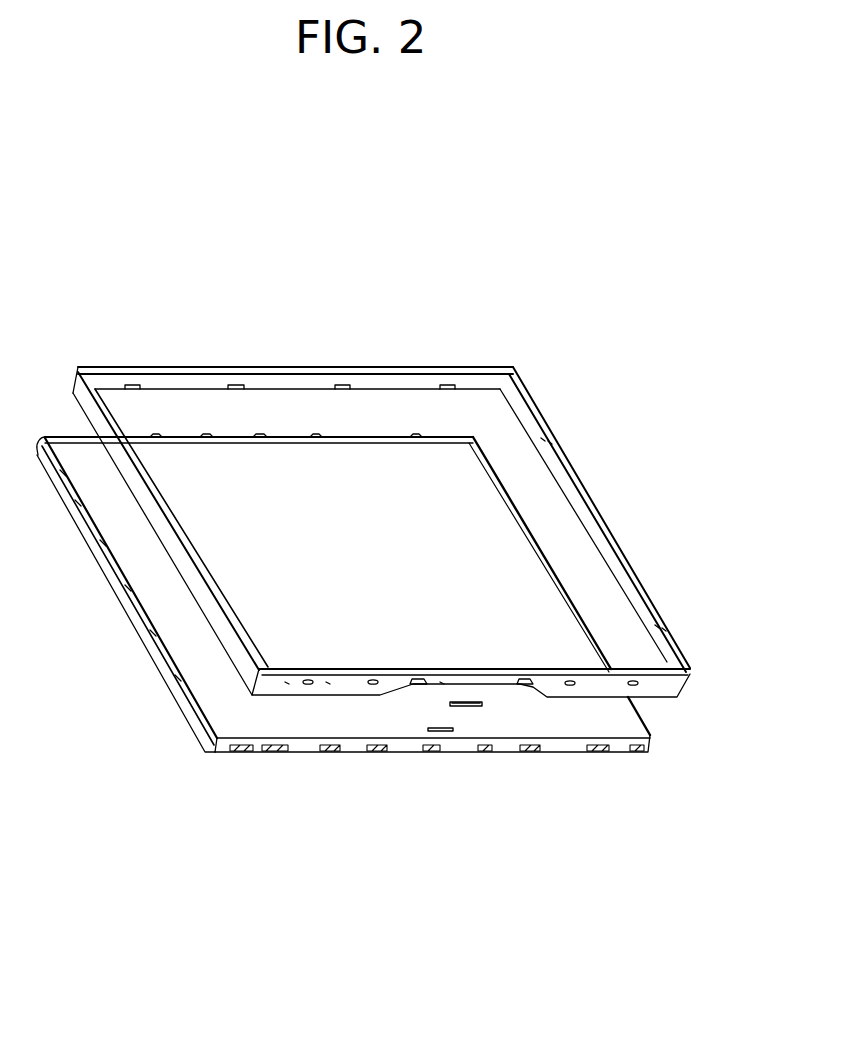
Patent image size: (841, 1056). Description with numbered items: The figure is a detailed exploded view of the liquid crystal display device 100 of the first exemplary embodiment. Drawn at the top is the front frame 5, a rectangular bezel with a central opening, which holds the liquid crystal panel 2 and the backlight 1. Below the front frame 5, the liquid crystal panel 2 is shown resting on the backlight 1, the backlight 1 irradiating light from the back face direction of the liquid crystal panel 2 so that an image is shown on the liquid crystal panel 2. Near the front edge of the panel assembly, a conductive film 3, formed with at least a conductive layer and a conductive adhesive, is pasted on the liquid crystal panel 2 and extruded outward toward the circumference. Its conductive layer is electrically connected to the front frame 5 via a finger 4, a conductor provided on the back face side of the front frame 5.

The liquid crystal display device 100 is at (610, 404).
The front frame 5 is at (583, 491).
The liquid crystal panel 2 is at (608, 726).
The backlight 1 is at (617, 752).
The conductive film 3 is at (452, 732).
The finger 4 is at (481, 707).